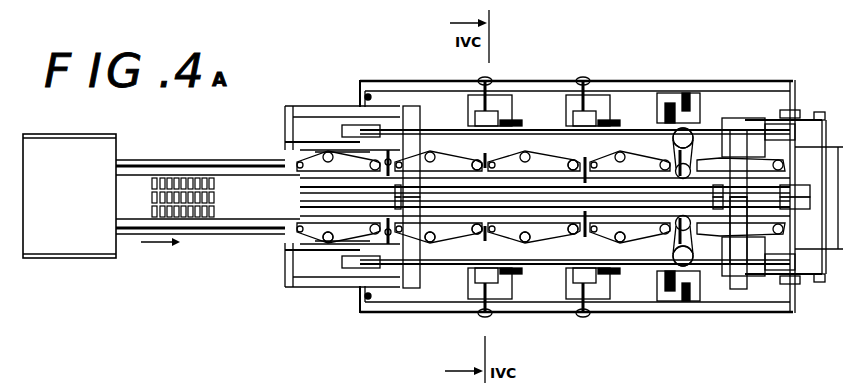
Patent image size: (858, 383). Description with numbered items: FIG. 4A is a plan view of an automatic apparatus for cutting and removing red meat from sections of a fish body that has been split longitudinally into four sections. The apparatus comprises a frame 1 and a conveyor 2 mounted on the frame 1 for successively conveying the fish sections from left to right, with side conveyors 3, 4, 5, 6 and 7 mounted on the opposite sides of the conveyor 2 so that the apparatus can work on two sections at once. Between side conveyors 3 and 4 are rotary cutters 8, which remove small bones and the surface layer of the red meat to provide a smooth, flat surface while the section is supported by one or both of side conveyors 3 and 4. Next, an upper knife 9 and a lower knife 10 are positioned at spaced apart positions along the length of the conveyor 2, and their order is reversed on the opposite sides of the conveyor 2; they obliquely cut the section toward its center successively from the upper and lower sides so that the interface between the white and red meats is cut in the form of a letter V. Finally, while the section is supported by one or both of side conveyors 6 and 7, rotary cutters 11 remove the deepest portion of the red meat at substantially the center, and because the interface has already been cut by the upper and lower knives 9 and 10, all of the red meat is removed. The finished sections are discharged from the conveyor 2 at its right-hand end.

The frame 1 is at (388, 313).
The conveyor 2 is at (237, 205).
The side conveyor 3 is at (342, 242).
The side conveyor 4 is at (448, 262).
The side conveyor 5 is at (537, 262).
The side conveyor 6 is at (648, 250).
The side conveyor 7 is at (766, 250).
The rotary cutter 8 is at (395, 150).
The upper knife 9 is at (476, 250).
The lower knife 10 is at (565, 250).
The rotary cutter 11 is at (700, 240).